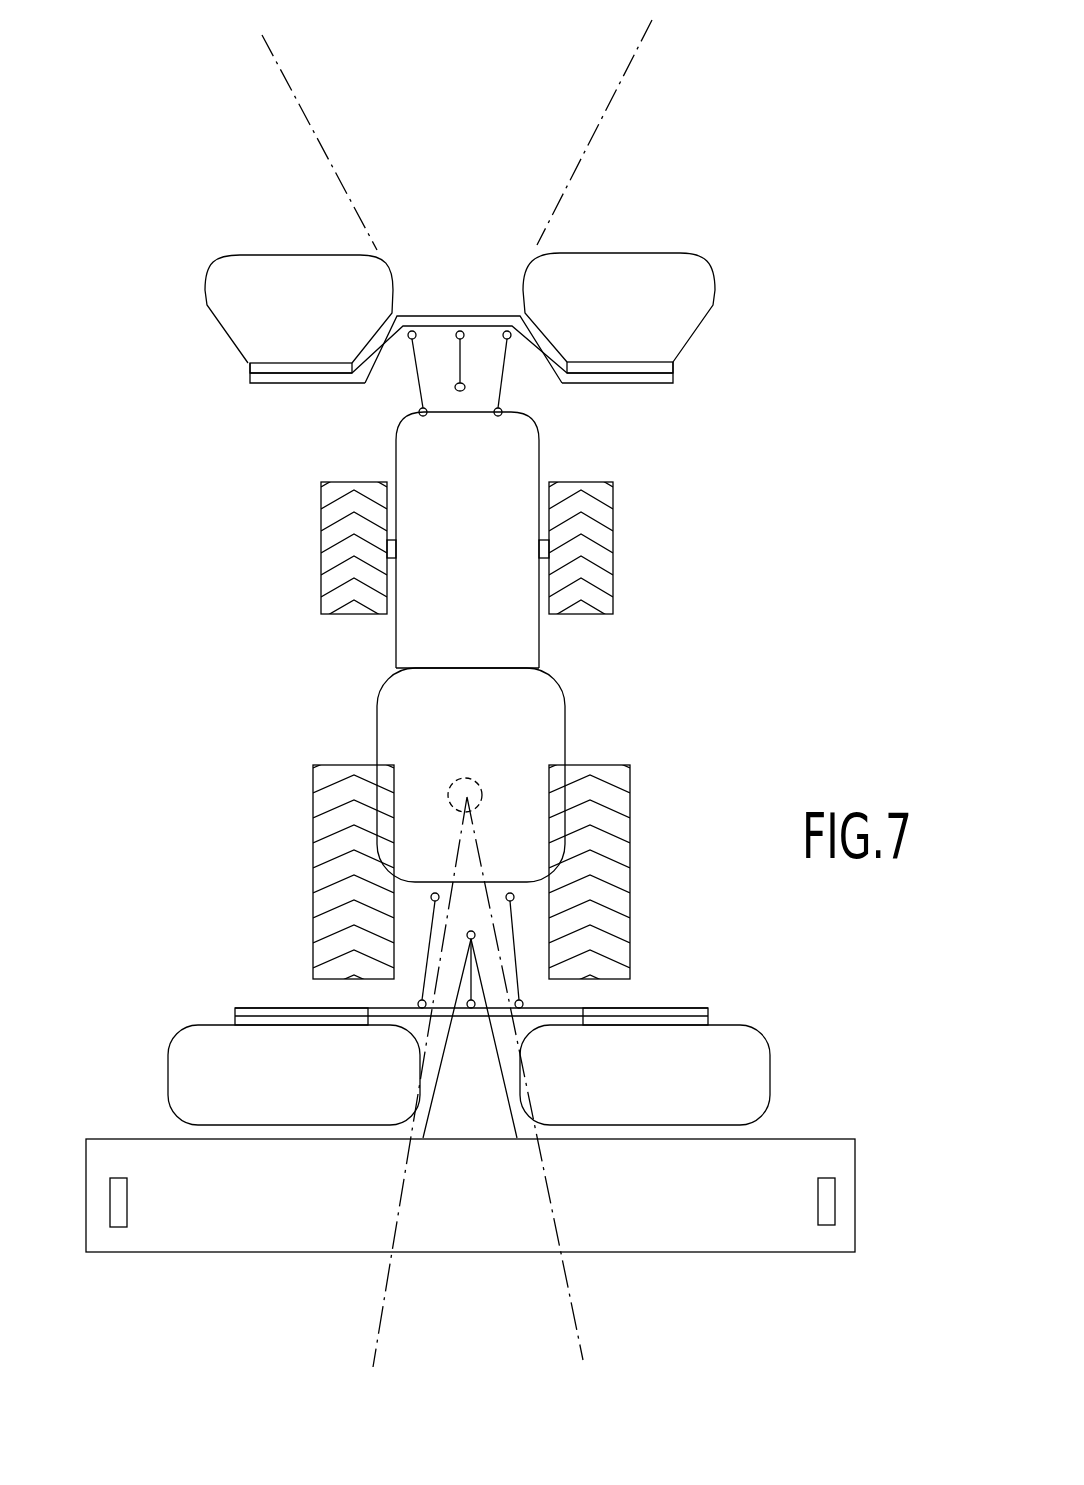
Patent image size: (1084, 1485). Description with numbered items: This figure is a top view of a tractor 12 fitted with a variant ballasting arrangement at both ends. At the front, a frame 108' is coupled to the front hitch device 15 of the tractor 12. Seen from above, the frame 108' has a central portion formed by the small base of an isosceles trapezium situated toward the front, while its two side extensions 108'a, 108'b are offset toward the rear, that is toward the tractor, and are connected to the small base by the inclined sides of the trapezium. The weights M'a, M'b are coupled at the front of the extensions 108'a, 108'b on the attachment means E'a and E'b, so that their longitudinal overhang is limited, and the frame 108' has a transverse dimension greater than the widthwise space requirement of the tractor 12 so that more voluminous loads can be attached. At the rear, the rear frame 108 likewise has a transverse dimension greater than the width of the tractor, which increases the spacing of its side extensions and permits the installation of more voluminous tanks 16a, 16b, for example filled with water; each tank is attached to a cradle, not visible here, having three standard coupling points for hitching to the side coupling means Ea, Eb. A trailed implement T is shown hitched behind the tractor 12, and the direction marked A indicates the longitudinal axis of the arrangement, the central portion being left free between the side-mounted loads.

The tractor 12 is at (378, 648).
The front hitch device 15 is at (520, 396).
The longitudinal axis / travel direction A is at (424, 296).
The frame 108' is at (459, 296).
The side extension 108'a is at (292, 407).
The side extension 108'b is at (646, 407).
The attachment means E'a is at (243, 380).
The attachment means E'b is at (671, 379).
The weight M'a is at (263, 287).
The weight M'b is at (654, 288).
The rear frame 108 is at (487, 1015).
The side coupling means Ea is at (263, 1022).
The side coupling means Eb is at (683, 1008).
The tank 16a is at (202, 1077).
The tank 16b is at (762, 1078).
The trailed implement T is at (346, 1223).